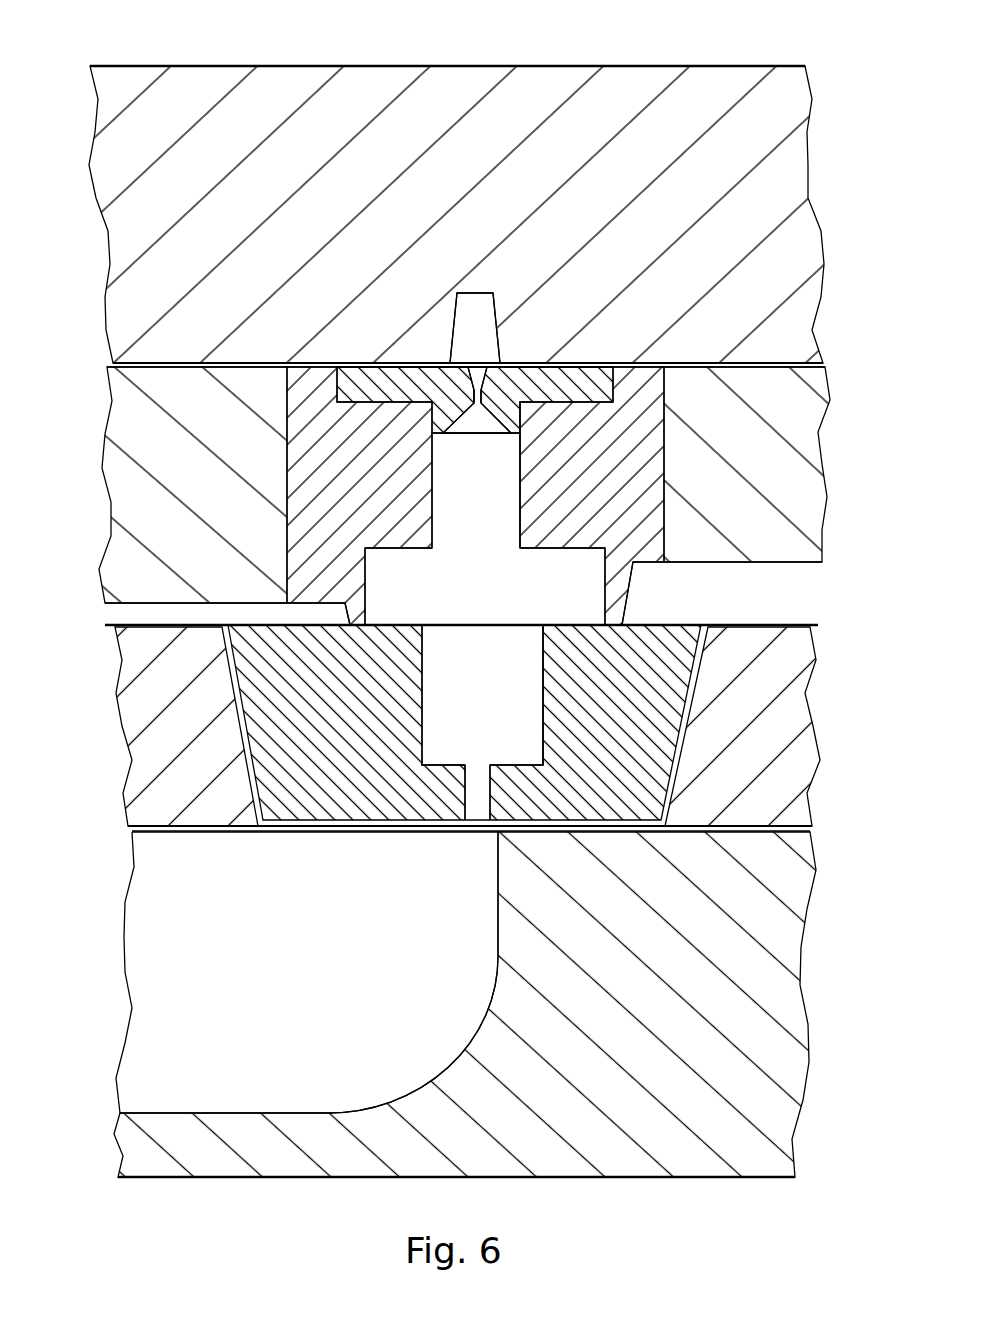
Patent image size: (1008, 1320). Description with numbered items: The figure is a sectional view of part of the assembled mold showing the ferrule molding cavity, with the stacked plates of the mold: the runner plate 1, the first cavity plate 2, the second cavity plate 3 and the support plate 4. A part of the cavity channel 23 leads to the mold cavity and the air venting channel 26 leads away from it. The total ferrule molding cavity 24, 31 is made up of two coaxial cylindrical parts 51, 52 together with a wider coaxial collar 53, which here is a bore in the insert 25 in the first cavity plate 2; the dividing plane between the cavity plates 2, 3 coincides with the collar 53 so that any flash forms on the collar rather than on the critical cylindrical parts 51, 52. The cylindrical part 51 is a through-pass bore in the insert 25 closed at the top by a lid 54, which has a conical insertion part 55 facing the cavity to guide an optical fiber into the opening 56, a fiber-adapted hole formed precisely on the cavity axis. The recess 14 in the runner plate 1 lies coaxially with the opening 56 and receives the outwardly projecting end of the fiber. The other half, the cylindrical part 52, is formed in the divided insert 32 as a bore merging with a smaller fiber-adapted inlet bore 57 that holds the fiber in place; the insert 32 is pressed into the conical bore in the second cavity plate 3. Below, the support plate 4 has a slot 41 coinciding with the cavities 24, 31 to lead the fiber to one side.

The runner plate 1 is at (703, 195).
The first cavity plate 2 is at (741, 445).
The second cavity plate 3 is at (741, 727).
The support plate 4 is at (704, 990).
The recess 14 is at (477, 330).
The cavity channel 23 is at (750, 595).
The mold cavity 24 is at (455, 487).
The insert 25 is at (320, 453).
The air venting channel 26 is at (205, 610).
The mold cavity 31 is at (450, 678).
The insert 32 is at (310, 705).
The slot 41 is at (262, 917).
The cylindrical part 51 is at (525, 490).
The cylindrical part 52 is at (545, 677).
The collar 53 is at (605, 560).
The lid 54 is at (560, 385).
The conical insertion part 55 is at (500, 412).
The opening 56 is at (477, 403).
The inlet bore 57 is at (460, 783).